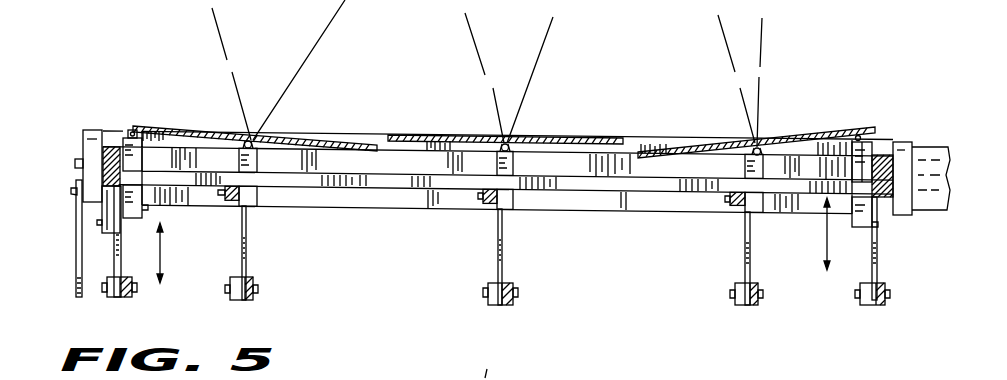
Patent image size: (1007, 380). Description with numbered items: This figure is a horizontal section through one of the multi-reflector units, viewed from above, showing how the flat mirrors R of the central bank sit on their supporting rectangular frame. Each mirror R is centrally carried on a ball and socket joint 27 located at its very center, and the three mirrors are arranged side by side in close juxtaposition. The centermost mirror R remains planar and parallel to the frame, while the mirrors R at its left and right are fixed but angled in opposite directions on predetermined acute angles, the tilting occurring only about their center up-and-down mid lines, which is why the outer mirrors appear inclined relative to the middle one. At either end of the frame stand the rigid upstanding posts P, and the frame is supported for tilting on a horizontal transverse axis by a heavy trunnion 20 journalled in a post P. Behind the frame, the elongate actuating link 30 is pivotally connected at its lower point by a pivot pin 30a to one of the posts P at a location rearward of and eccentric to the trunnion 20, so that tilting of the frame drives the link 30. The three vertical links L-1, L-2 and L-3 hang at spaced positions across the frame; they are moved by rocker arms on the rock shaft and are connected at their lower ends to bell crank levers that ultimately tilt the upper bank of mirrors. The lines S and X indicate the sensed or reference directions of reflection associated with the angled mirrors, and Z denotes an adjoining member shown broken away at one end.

The sensing beam / line of sight S is at (215, 28).
The reference axis line X is at (313, 52).
The ball and socket joint 27 is at (262, 137).
The flat mirror R is at (432, 136).
The upstanding post P is at (82, 137).
The trunnion 20 is at (75, 163).
The pivot pin 30a is at (73, 190).
The actuating link 30 is at (78, 290).
The first vertical link L-1 is at (253, 297).
The second vertical link L-2 is at (510, 300).
The third vertical link L-3 is at (758, 302).
The broken-away support member Z is at (945, 205).